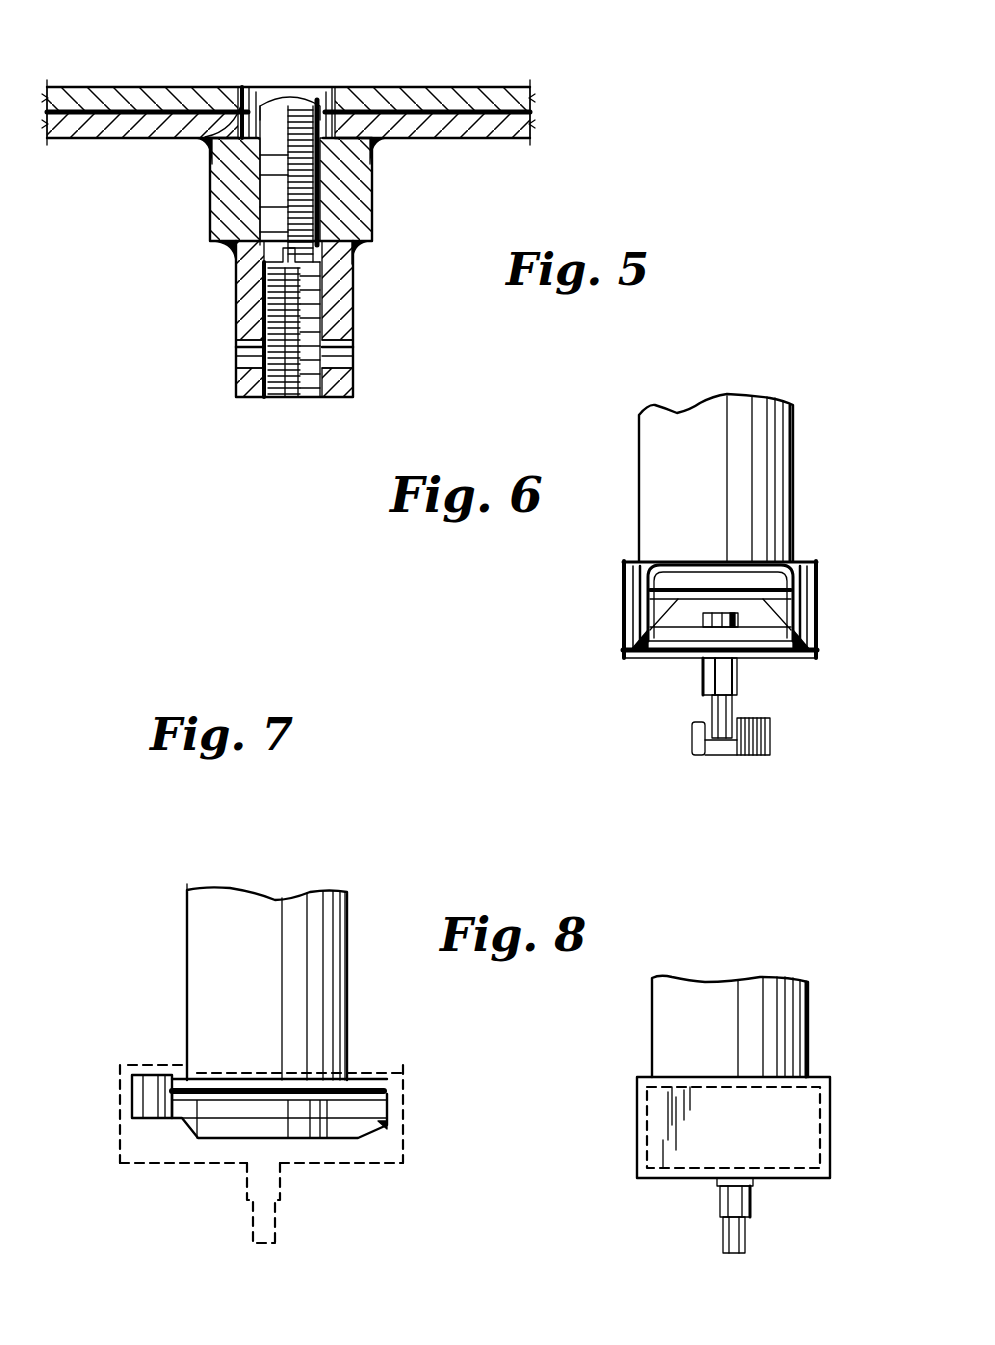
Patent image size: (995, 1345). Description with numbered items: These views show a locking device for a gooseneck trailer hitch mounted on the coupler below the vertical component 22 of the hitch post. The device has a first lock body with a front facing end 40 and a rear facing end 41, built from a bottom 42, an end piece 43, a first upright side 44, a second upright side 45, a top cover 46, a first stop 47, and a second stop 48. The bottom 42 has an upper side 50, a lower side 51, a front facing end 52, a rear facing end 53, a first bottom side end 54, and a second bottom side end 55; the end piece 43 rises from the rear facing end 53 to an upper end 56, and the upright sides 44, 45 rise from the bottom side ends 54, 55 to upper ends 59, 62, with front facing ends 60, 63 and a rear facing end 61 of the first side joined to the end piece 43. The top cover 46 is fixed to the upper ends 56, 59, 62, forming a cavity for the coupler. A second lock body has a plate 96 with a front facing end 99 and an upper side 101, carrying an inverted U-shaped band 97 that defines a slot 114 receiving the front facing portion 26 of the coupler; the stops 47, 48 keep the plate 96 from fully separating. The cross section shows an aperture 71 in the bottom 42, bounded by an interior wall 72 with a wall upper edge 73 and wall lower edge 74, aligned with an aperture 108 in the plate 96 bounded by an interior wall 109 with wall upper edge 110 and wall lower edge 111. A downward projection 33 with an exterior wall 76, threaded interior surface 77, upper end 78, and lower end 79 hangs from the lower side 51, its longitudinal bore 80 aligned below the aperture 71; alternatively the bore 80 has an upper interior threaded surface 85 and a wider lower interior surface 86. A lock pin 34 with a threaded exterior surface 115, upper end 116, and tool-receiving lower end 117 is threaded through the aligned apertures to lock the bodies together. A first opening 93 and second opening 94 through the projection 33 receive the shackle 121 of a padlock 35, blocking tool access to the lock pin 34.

In FIG. 6, the vertical component 22 is at (730, 407).
In FIG. 7, the vertical component 22 is at (263, 897).
In FIG. 8, the vertical component 22 is at (712, 1001).
In FIG. 6, the front facing portion 26 is at (687, 565).
In FIG. 5, the downward projection 33 is at (251, 194).
In FIG. 6, the downward projection 33 is at (708, 694).
In FIG. 7, the downward projection 33 is at (248, 1208).
In FIG. 8, the downward projection 33 is at (723, 1221).
In FIG. 5, the lock pin 34 is at (262, 90).
In FIG. 6, the padlock 35 is at (770, 749).
In FIG. 7, the front facing end 40 is at (402, 1109).
In FIG. 7, the rear facing end 41 is at (120, 1107).
In FIG. 8, the rear facing end 41 is at (805, 1116).
In FIG. 5, the bottom 42 is at (72, 138).
In FIG. 7, the bottom 42 is at (168, 1168).
In FIG. 7, the end piece 43 is at (120, 1141).
In FIG. 8, the end piece 43 is at (733, 1127).
In FIG. 6, the first upright side 44 is at (623, 582).
In FIG. 6, the second upright side 45 is at (818, 608).
In FIG. 6, the top cover 46 is at (630, 540).
In FIG. 8, the top cover 46 is at (820, 1078).
In FIG. 6, the first stop 47 is at (627, 634).
In FIG. 6, the second stop 48 is at (810, 637).
In FIG. 5, the upper side 50 is at (95, 86).
In FIG. 5, the lower side 51 is at (123, 138).
In FIG. 6, the lower side 51 is at (805, 658).
In FIG. 7, the lower side 51 is at (153, 1171).
In FIG. 8, the lower side 51 is at (815, 1178).
In FIG. 6, the front facing end 52 is at (640, 662).
In FIG. 7, the front facing end 52 is at (403, 1163).
In FIG. 7, the rear facing end 53 is at (120, 1163).
In FIG. 8, the rear facing end 53 is at (800, 1179).
In FIG. 6, the first bottom side end 54 is at (624, 650).
In FIG. 6, the second bottom side end 55 is at (805, 650).
In FIG. 7, the upper end 56 is at (110, 1066).
In FIG. 8, the upper end 56 is at (655, 1101).
In FIG. 6, the upper end 59 is at (619, 568).
In FIG. 6, the front facing end 60 is at (623, 607).
In FIG. 7, the front facing end 60 is at (402, 1143).
In FIG. 7, the rear facing end 61 is at (118, 1084).
In FIG. 8, the rear facing end 61 is at (820, 1139).
In FIG. 6, the upper end 62 is at (818, 564).
In FIG. 6, the front facing end 63 is at (818, 582).
In FIG. 5, the aperture 71 is at (346, 115).
In FIG. 5, the interior wall 72 is at (197, 138).
In FIG. 5, the wall upper edge 73 is at (335, 94).
In FIG. 5, the wall lower edge 74 is at (360, 88).
In FIG. 5, the exterior wall 76 is at (236, 329).
In FIG. 7, the exterior wall 76 is at (285, 1181).
In FIG. 8, the exterior wall 76 is at (750, 1206).
In FIG. 5, the interior surface 77 is at (245, 293).
In FIG. 5, the upper end 78 is at (214, 174).
In FIG. 8, the upper end 78 is at (717, 1191).
In FIG. 5, the lower end 79 is at (325, 397).
In FIG. 7, the lower end 79 is at (270, 1245).
In FIG. 8, the lower end 79 is at (738, 1253).
In FIG. 5, the longitudinal bore 80 is at (326, 325).
In FIG. 5, the upper interior threaded surface 85 is at (210, 229).
In FIG. 5, the lower interior surface 86 is at (335, 294).
In FIG. 5, the first opening 93 is at (345, 359).
In FIG. 6, the first opening 93 is at (736, 704).
In FIG. 5, the second opening 94 is at (250, 358).
In FIG. 6, the second opening 94 is at (700, 721).
In FIG. 5, the plate 96 is at (534, 100).
In FIG. 6, the band 97 is at (730, 590).
In FIG. 7, the band 97 is at (405, 1075).
In FIG. 6, the front facing end 99 is at (665, 655).
In FIG. 5, the upper side 101 is at (492, 87).
In FIG. 5, the aperture 108 is at (297, 90).
In FIG. 5, the interior wall 109 is at (242, 96).
In FIG. 5, the wall upper edge 110 is at (250, 87).
In FIG. 5, the wall lower edge 111 is at (202, 87).
In FIG. 7, the slot 114 is at (350, 1079).
In FIG. 5, the threaded exterior surface 115 is at (352, 210).
In FIG. 5, the upper end 116 is at (278, 113).
In FIG. 5, the lower end 117 is at (347, 256).
In FIG. 6, the shackle 121 is at (740, 721).